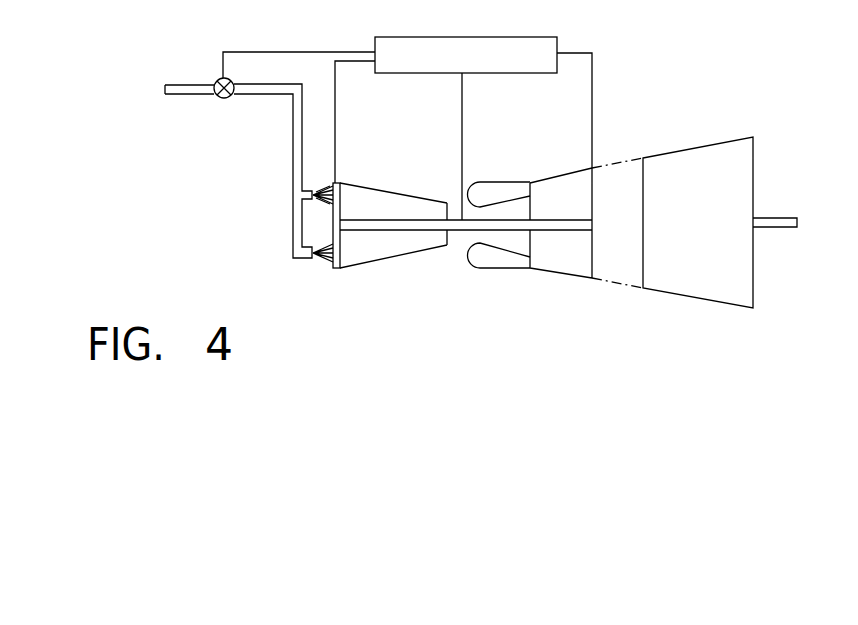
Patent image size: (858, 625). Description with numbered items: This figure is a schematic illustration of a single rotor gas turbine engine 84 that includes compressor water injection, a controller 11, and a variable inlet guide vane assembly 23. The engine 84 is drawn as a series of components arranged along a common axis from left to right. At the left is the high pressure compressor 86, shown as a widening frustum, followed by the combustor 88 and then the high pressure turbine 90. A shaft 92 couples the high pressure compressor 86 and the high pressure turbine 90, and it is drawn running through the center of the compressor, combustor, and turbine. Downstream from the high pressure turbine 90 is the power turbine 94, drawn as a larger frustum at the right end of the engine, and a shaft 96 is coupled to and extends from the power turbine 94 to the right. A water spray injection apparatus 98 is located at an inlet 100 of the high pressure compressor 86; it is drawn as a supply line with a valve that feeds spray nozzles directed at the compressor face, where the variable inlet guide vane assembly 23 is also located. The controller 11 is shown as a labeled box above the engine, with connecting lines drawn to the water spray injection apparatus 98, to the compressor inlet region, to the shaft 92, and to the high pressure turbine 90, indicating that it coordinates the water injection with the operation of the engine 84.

The controller 11 is at (559, 42).
The variable inlet guide vane assembly 23 is at (337, 268).
The single rotor gas turbine engine 84 is at (680, 102).
The high pressure compressor 86 is at (384, 262).
The combustor 88 is at (485, 188).
The high pressure turbine 90 is at (548, 270).
The shaft 92 is at (453, 240).
The power turbine 94 is at (690, 296).
The shaft 96 is at (775, 228).
The water spray injection apparatus 98 is at (291, 126).
The inlet 100 is at (337, 197).